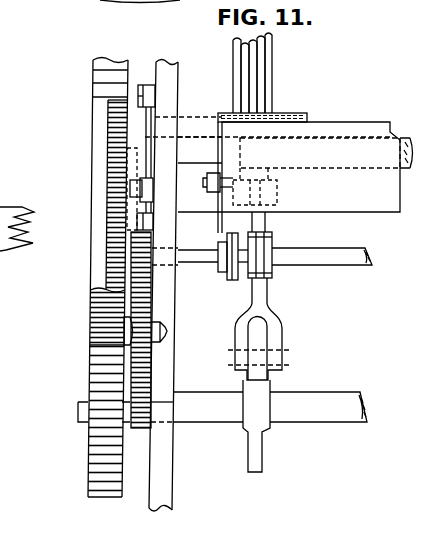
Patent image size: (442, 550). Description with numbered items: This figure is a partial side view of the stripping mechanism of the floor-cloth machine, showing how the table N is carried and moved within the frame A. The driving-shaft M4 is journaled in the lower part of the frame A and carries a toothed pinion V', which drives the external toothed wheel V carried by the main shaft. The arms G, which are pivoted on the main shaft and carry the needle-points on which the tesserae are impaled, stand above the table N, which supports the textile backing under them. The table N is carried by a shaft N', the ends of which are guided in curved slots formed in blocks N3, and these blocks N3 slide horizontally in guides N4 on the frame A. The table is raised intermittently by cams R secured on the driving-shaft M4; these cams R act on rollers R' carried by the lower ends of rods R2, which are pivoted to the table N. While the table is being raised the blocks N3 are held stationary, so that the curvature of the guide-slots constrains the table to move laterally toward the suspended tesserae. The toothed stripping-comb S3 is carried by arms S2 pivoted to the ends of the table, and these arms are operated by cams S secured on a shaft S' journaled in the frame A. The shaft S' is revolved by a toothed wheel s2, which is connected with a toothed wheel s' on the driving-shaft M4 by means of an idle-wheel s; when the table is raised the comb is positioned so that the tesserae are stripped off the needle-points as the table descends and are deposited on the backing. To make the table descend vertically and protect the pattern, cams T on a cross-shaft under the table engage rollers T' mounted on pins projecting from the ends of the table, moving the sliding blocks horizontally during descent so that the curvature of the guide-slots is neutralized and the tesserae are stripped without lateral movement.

The external toothed wheel V is at (101, 278).
The toothed pinion V' is at (95, 421).
The frame A is at (163, 286).
The guides N4 is at (143, 86).
The blocks N3 is at (162, 117).
The table shaft N' is at (200, 150).
The table N is at (295, 167).
The impalement arms G is at (240, 70).
The toothed stripping-comb S3 is at (273, 118).
The cams T is at (103, 189).
The rollers T' is at (103, 199).
The stripping-comb arms S2 is at (230, 177).
The toothed wheel s2 is at (108, 263).
The idle-wheel s is at (75, 318).
The toothed wheel on driving-shaft s' is at (145, 352).
The cams S is at (228, 267).
The shaft S' is at (262, 256).
The rods R2 is at (263, 220).
The rollers R' is at (264, 332).
The cams R is at (261, 426).
The driving-shaft M4 is at (222, 407).